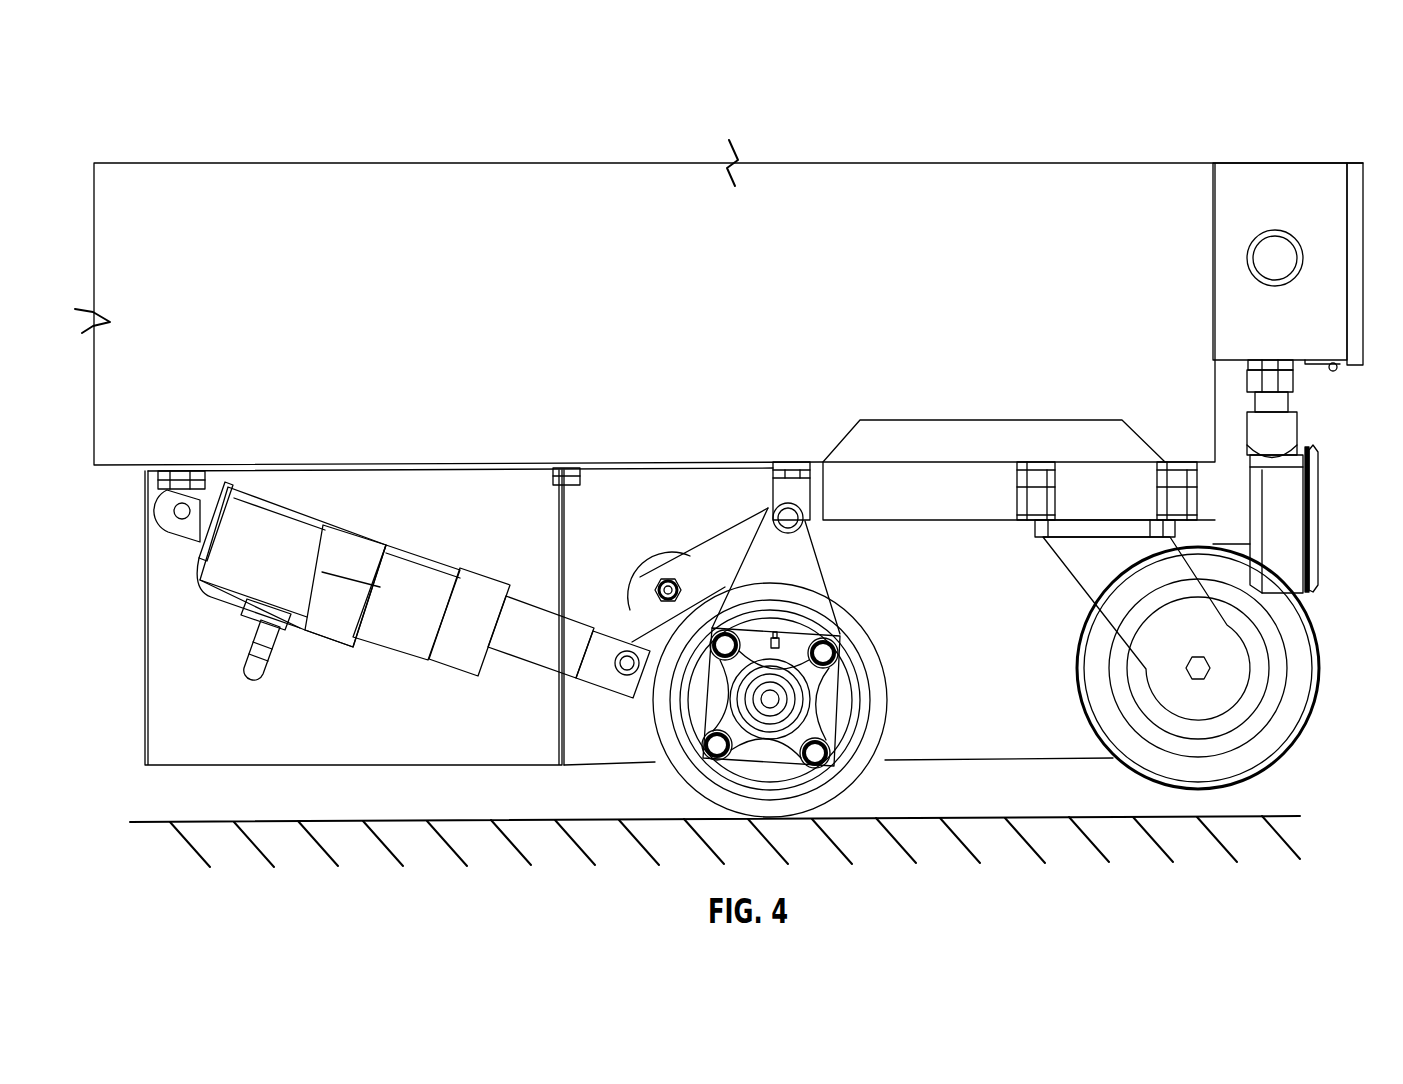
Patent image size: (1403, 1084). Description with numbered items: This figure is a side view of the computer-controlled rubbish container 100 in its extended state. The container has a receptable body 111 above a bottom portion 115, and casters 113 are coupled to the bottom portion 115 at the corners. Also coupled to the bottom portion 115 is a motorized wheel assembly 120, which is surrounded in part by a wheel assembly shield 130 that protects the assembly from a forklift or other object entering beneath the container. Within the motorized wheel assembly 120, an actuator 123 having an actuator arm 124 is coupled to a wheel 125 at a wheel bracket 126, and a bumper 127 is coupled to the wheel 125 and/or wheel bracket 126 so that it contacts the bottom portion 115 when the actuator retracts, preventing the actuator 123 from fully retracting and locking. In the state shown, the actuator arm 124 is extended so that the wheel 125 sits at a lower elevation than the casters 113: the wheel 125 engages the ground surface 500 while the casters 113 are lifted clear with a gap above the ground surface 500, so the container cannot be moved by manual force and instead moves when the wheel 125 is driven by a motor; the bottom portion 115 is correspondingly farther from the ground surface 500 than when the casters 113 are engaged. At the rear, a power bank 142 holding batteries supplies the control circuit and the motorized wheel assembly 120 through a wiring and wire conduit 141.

The computer-controlled rubbish container 100 is at (141, 110).
The receptable body 111 is at (723, 285).
The casters 113 is at (1305, 612).
The bottom portion 115 is at (350, 464).
The motorized wheel assembly 120 is at (675, 455).
The actuator 123 is at (388, 634).
The actuator arm 124 is at (540, 655).
The wheel 125 is at (876, 645).
The wheel bracket 126 is at (734, 547).
The bumper 127 is at (653, 568).
The wheel assembly shield 130 is at (224, 742).
The wiring and wire conduit 141 is at (1312, 450).
The power bank 142 is at (1213, 242).
The ground surface 500 is at (142, 823).